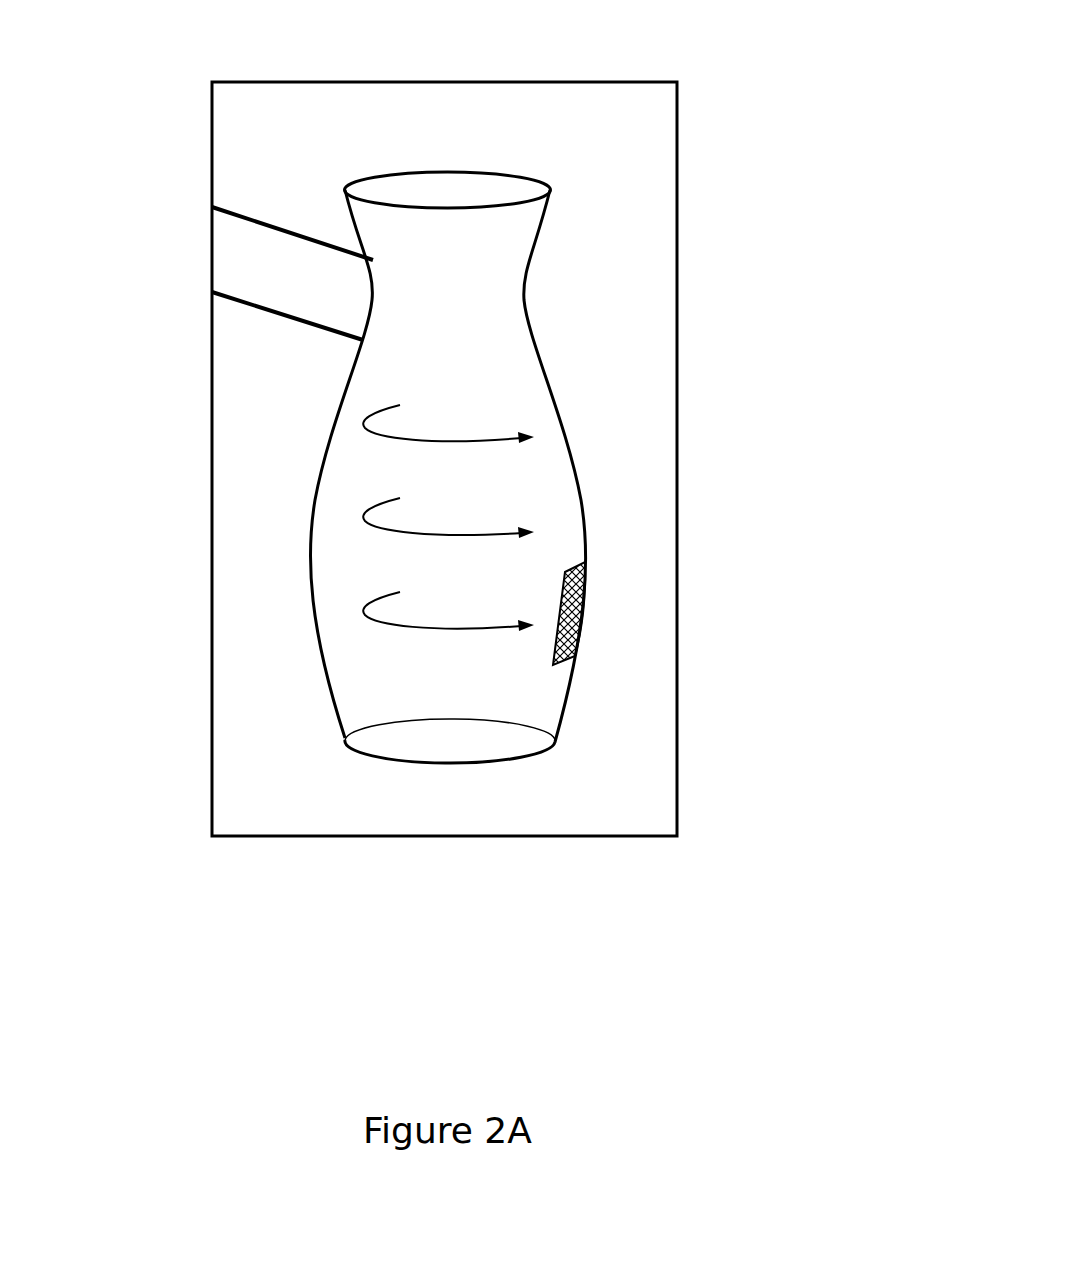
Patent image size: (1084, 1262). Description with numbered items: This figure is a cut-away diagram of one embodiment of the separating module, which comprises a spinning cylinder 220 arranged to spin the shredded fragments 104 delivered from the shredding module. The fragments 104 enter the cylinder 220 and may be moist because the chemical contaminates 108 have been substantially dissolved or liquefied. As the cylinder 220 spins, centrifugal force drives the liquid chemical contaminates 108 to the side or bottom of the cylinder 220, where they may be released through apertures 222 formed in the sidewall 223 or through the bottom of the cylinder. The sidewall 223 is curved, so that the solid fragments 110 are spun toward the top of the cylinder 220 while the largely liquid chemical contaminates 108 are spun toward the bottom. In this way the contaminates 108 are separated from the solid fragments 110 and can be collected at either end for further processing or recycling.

The shredded fragments 104 is at (198, 248).
The solid fragments 110 is at (432, 187).
The spinning cylinder 220 is at (559, 398).
The sidewall 223 is at (580, 470).
The apertures 222 is at (590, 595).
The chemical contaminates 108 is at (382, 857).